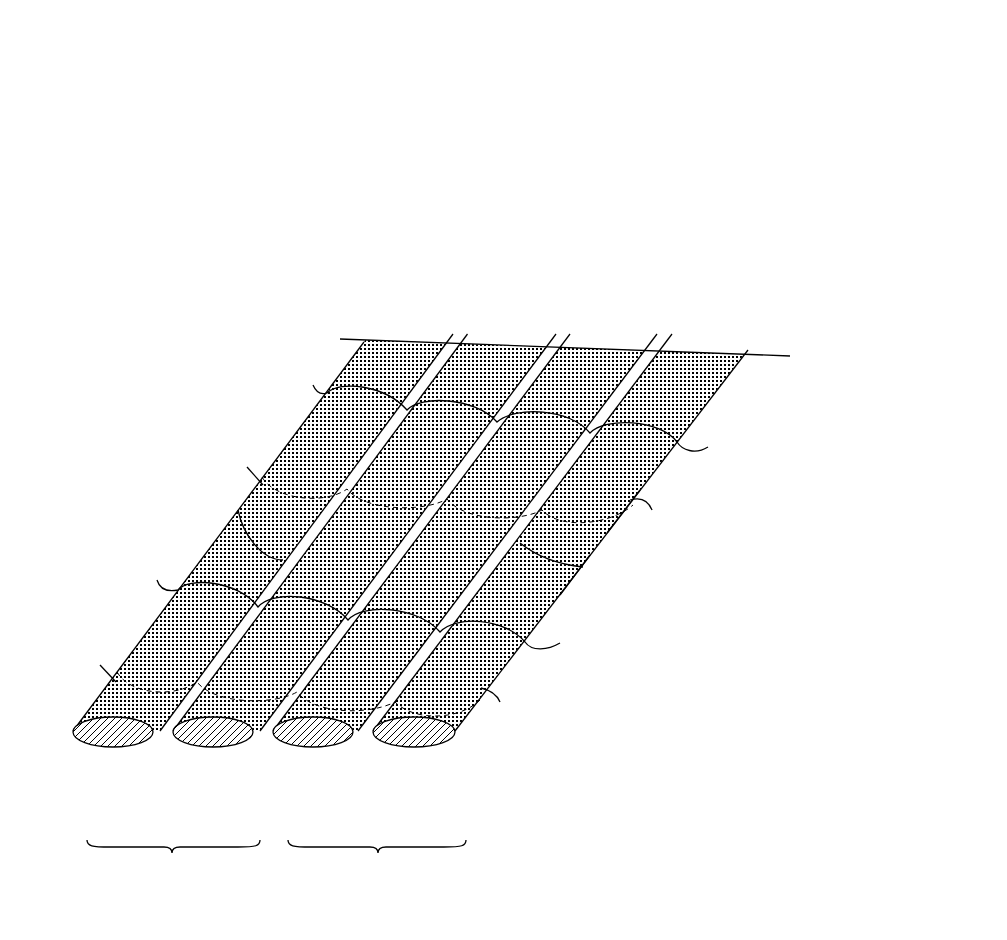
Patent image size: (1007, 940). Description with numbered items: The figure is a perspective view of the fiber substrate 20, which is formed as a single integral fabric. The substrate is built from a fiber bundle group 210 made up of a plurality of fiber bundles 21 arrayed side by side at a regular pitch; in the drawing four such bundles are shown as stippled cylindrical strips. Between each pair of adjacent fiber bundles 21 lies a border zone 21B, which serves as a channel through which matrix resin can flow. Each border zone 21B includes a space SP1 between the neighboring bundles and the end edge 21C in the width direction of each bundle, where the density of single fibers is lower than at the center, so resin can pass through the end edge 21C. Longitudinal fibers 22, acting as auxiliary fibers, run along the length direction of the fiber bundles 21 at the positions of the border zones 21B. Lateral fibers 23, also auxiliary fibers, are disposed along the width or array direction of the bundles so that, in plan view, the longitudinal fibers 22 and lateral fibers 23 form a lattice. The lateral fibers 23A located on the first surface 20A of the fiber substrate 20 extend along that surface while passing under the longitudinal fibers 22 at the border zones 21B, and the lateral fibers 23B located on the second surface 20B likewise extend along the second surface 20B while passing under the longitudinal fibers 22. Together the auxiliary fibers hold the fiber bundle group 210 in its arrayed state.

The fiber substrate 20 is at (503, 441).
The first surface 20A is at (607, 533).
The second surface 20B is at (568, 598).
The fiber bundle 21 is at (483, 373).
The border zone 21B is at (276, 861).
The end edge 21C is at (140, 746).
The space SP1 is at (160, 740).
The longitudinal fiber 22 is at (238, 510).
The lateral fiber 23 is at (461, 564).
The lateral fiber on first surface 23A is at (698, 417).
The lateral fiber on second surface 23B is at (655, 497).
The fiber bundle group 210 is at (712, 343).